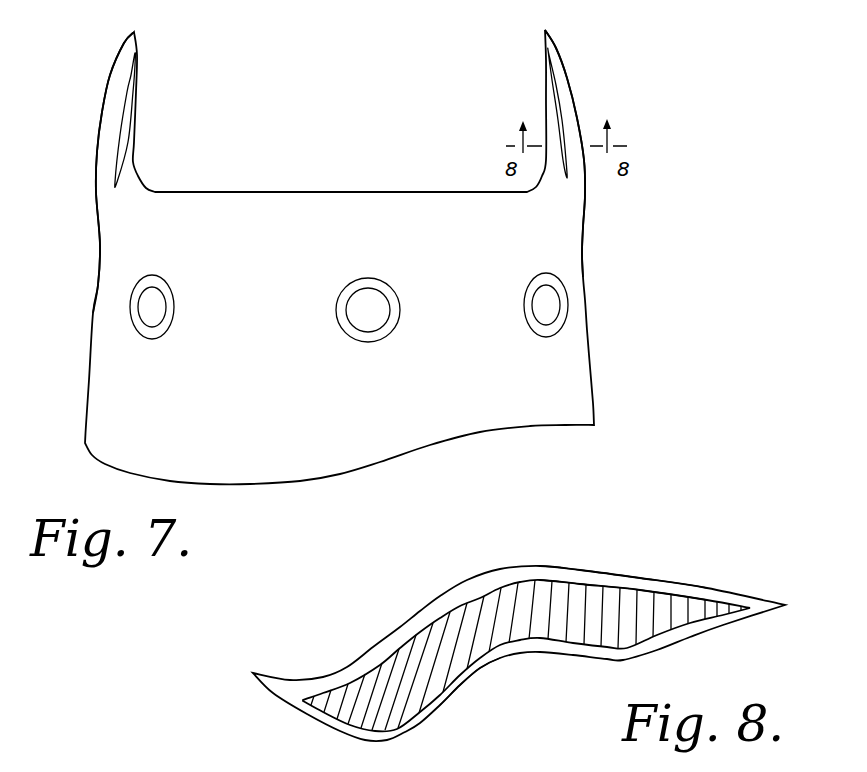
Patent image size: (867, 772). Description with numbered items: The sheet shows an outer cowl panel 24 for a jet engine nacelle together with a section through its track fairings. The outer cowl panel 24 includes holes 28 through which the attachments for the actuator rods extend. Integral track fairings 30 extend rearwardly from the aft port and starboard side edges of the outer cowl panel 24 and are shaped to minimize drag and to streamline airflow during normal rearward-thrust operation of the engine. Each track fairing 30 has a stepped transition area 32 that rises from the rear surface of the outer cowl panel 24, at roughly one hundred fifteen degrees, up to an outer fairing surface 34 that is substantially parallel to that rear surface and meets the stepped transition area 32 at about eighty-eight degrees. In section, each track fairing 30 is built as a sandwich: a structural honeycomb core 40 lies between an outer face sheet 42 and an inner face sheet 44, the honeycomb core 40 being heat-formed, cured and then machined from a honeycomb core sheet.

In FIG. 7, the outer cowl panel 24 is at (92, 408).
In FIG. 7, the holes 28 is at (147, 307).
In FIG. 7, the track fairings 30 is at (109, 74).
In FIG. 8, the track fairings 30 is at (455, 544).
In FIG. 7, the stepped transition area 32 is at (126, 114).
In FIG. 8, the stepped transition area 32 is at (402, 615).
In FIG. 8, the outer fairing surface 34 is at (560, 566).
In FIG. 8, the structural honeycomb core 40 is at (680, 607).
In FIG. 8, the outer face sheet 42 is at (628, 578).
In FIG. 8, the inner face sheet 44 is at (505, 660).